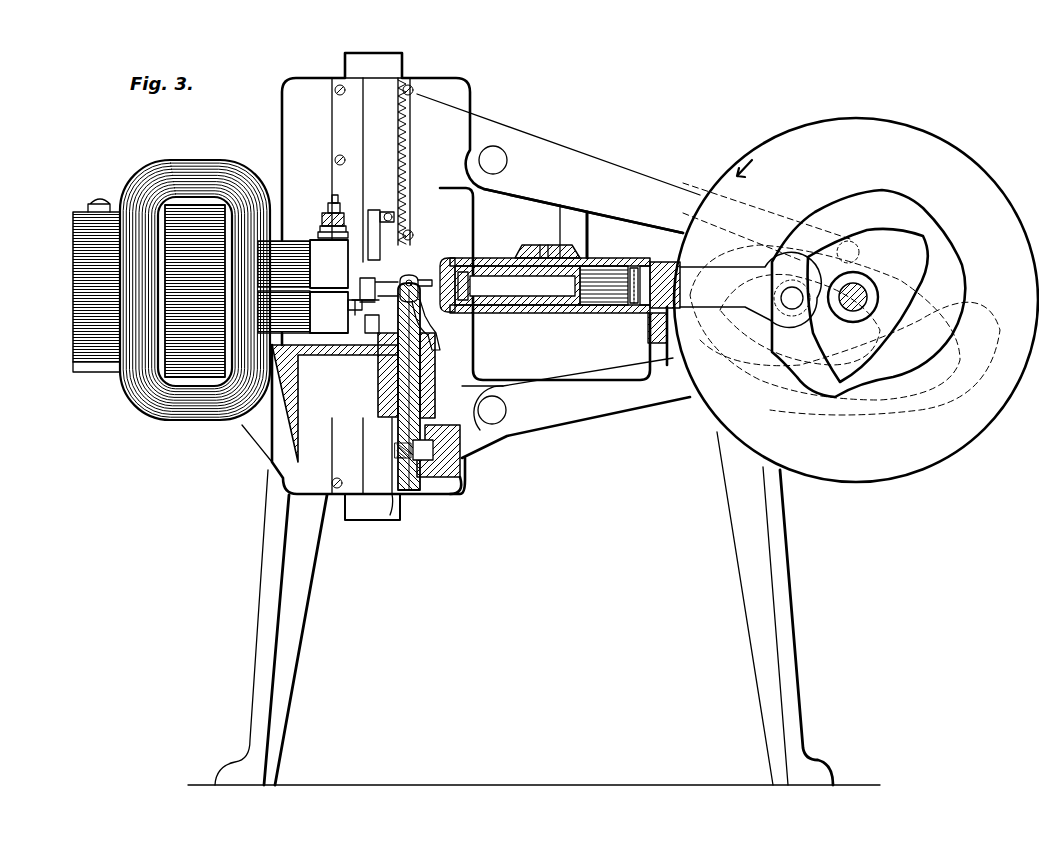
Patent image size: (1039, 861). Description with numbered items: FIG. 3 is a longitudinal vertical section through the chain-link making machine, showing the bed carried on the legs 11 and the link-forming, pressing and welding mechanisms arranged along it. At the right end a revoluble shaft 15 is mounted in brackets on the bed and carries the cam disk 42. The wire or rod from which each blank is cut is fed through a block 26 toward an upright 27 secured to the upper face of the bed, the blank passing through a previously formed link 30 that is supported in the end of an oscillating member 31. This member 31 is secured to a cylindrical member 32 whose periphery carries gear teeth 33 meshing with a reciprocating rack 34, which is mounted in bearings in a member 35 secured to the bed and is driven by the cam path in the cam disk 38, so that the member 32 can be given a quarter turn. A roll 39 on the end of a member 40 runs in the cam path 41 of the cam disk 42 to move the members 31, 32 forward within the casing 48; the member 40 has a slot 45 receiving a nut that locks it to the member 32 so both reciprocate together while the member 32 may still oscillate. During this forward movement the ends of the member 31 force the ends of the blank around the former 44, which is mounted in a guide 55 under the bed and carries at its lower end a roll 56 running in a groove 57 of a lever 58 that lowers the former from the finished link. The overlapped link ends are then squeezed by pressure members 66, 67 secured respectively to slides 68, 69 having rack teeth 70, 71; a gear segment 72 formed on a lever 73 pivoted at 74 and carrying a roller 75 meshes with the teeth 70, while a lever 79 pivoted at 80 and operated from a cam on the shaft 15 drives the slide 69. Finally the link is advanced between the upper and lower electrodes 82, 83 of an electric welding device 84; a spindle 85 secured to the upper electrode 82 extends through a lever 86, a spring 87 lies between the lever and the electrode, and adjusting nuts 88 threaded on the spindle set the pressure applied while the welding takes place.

The legs 11 is at (265, 618).
The revoluble shaft 15 is at (862, 308).
The block 26 is at (645, 300).
The upright 27 is at (633, 296).
The previously formed link 30 is at (438, 325).
The oscillating member 31 is at (447, 280).
The cylindrical member 32 is at (490, 296).
The gear teeth 33 is at (598, 295).
The reciprocating rack 34 is at (545, 256).
The member 35 is at (540, 250).
The cam disk 38 is at (580, 238).
The roll 39 is at (780, 304).
The member 40 is at (712, 305).
The cam path 41 is at (800, 335).
The cam disk 42 is at (765, 140).
The former 44 is at (390, 283).
The slot 45 is at (662, 262).
The casing 48 is at (497, 262).
The guide 55 is at (398, 398).
The roll 56 is at (425, 462).
The groove 57 is at (455, 468).
The lever 58 is at (466, 480).
The pressure member 66 is at (372, 210).
The pressure member 67 is at (372, 330).
The slidable member 68 is at (385, 85).
The slidable member 69 is at (378, 480).
The rack teeth 70 is at (400, 108).
The rack teeth 71 is at (392, 500).
The gear segment 72 is at (466, 135).
The lever 73 is at (612, 178).
The pivot 74 is at (496, 158).
The roller 75 is at (838, 250).
The lever 79 is at (615, 410).
The pivot 80 is at (500, 417).
The upper electrode 82 is at (329, 264).
The lower electrode 83 is at (330, 325).
The electric welding device 84 is at (150, 165).
The spindle 85 is at (332, 204).
The lever 86 is at (322, 220).
The spring 87 is at (318, 233).
The adjusting nuts 88 is at (338, 203).